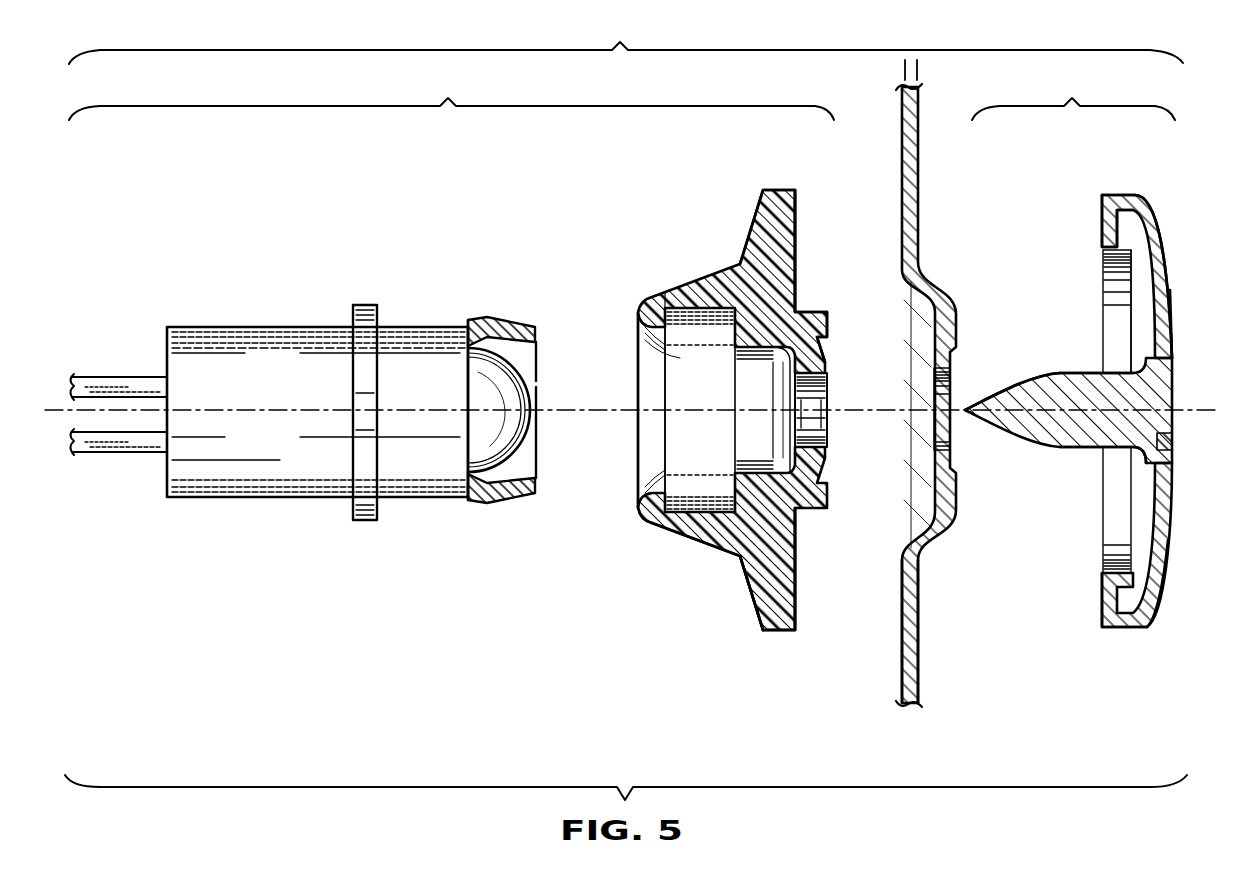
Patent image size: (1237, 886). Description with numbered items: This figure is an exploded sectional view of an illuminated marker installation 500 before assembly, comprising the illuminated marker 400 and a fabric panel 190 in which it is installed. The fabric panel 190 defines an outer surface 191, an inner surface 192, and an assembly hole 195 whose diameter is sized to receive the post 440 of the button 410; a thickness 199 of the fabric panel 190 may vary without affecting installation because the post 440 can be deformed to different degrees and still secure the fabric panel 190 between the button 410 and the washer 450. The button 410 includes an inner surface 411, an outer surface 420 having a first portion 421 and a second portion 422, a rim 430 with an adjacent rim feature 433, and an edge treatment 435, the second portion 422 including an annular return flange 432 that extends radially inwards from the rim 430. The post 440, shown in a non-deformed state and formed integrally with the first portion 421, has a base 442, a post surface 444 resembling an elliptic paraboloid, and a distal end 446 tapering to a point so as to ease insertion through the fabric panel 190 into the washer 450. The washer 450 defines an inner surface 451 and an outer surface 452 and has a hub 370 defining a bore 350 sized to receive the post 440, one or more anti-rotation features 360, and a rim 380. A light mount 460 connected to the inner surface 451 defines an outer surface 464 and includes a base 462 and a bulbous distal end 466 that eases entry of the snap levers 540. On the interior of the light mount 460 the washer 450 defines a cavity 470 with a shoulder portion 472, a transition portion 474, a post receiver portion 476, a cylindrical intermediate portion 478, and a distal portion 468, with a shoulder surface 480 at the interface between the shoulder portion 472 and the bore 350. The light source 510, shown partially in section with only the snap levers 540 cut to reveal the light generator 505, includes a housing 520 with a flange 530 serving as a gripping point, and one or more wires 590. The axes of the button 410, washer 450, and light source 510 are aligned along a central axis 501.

The illuminated marker installation 500 is at (626, 38).
The illuminated marker 400 is at (622, 95).
The thickness 199 is at (955, 69).
The wires 590 is at (120, 454).
The central axis 501 is at (145, 407).
The light source 510 is at (222, 503).
The housing 520 is at (224, 327).
The flange 530 is at (362, 305).
The snap levers 540 is at (506, 324).
The light generator 505 is at (514, 438).
The light mount 460 is at (691, 548).
The shoulder surface 480 is at (785, 372).
The base 462 is at (731, 555).
The distal end 466 is at (638, 520).
The cavity 470 is at (636, 316).
The intermediate portion 478 is at (655, 332).
The post receiver portion 476 is at (690, 392).
The distal portion 468 is at (655, 427).
The outer surface 464 is at (688, 278).
The transition portion 474 is at (778, 428).
The shoulder portion 472 is at (790, 423).
The bore 350 is at (812, 385).
The anti-rotation features 360 is at (803, 312).
The hub 370 is at (829, 350).
The rim 380 is at (785, 633).
The washer 450 is at (773, 637).
The inner surface 451 is at (751, 600).
The outer surface 452 is at (798, 565).
The fabric panel 190 is at (911, 713).
The assembly hole 195 is at (957, 422).
The outer surface 191 is at (924, 626).
The inner surface 192 is at (898, 563).
The outer surface 420 is at (1163, 227).
The post 440 is at (1035, 367).
The first portion 421 is at (1180, 455).
The button 410 is at (1125, 645).
The inner surface 411 is at (1127, 304).
The rim 430 is at (1125, 194).
The clip hook 433 is at (1096, 207).
The edge treatment 435 is at (1142, 194).
The second portion 422 is at (1172, 313).
The annular return flange 432 is at (1103, 613).
The base 442 is at (1103, 452).
The post surface 444 is at (1079, 367).
The distal end 446 is at (966, 408).